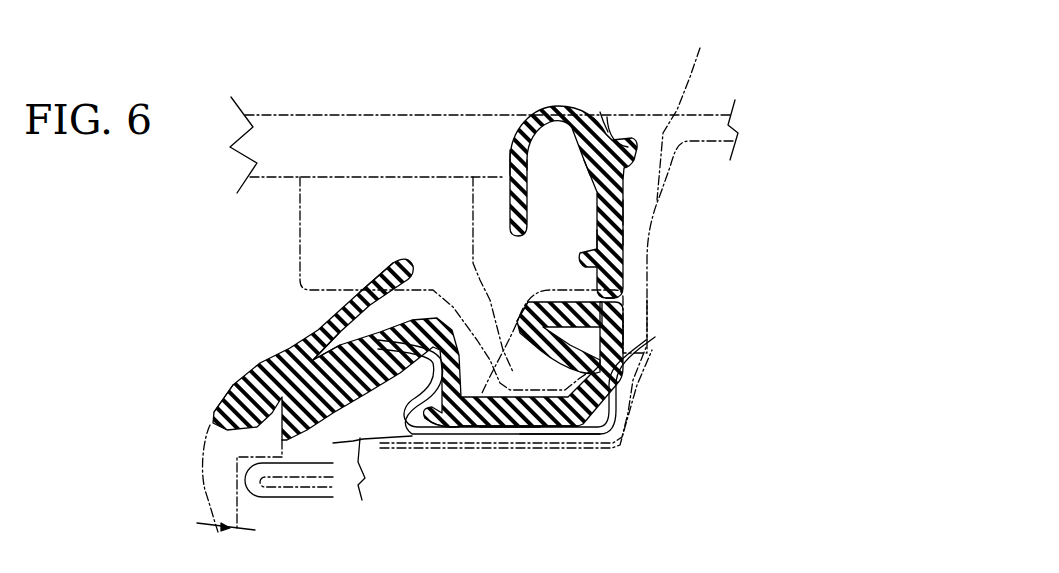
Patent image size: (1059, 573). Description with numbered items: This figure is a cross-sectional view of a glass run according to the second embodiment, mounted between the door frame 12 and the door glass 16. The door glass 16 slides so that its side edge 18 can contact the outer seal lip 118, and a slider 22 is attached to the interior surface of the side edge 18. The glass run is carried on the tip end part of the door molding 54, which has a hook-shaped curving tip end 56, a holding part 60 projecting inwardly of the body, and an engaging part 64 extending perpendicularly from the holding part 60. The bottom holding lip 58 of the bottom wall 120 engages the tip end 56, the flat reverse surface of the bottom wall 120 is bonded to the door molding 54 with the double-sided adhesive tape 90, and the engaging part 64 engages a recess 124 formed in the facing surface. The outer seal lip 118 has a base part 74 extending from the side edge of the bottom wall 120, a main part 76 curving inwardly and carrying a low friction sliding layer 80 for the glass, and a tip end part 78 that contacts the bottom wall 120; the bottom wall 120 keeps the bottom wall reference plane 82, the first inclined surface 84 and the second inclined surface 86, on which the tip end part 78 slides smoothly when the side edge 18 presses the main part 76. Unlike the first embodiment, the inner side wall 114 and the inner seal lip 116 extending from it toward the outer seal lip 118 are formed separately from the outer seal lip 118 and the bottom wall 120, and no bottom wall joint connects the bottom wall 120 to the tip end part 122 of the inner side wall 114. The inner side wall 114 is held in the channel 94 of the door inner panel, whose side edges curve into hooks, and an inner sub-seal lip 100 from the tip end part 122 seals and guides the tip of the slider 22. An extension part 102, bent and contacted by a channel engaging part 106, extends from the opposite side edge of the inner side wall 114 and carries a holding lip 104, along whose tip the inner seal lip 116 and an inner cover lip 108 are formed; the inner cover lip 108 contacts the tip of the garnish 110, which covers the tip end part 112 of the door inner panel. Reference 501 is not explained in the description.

The door frame 12 is at (606, 450).
The door glass 16 is at (258, 112).
The side edge 18 is at (590, 110).
The slider 22 is at (313, 202).
The door molding 54 is at (718, 108).
The curving tip end 56 is at (684, 111).
The bottom holding lip 58 is at (637, 150).
The holding part 60 is at (663, 283).
The engaging part 64 is at (298, 275).
The base part 74 is at (565, 200).
The main part 76 is at (510, 157).
The tip end part 78 is at (545, 292).
The low friction sliding layer 80 is at (510, 167).
The bottom wall reference plane 82 is at (548, 228).
The first inclined surface 84 is at (626, 212).
The second inclined surface 86 is at (608, 305).
The double-sided adhesive tape 90 is at (630, 232).
The channel 94 is at (540, 447).
The inner sub-seal lip 100 is at (614, 375).
The extension part 102 is at (467, 425).
The holding lip 104 is at (295, 342).
The channel engaging part 106 is at (447, 447).
The inner cover lip 108 is at (225, 399).
The garnish 110 is at (208, 457).
The tip end part 112 is at (210, 490).
The inner side wall 114 is at (508, 427).
The inner seal lip 116 is at (355, 345).
The outer seal lip 118 is at (514, 126).
The bottom wall 120 is at (620, 247).
The tip end part 122 is at (624, 333).
The recess 124 is at (568, 305).
The opening 501 is at (608, 104).